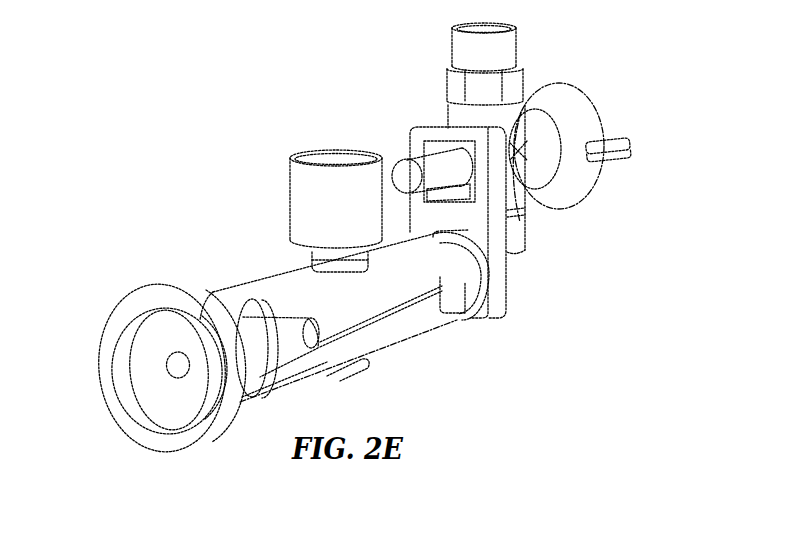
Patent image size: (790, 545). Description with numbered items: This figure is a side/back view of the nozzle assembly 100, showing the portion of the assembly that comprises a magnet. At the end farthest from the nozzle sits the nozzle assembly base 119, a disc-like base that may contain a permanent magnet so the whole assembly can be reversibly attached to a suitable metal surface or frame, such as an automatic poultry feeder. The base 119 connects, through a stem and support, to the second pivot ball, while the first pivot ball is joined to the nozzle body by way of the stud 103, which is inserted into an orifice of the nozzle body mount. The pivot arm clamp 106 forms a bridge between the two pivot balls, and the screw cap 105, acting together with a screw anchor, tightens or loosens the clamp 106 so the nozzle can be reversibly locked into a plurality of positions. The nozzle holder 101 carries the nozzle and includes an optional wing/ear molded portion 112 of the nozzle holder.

The nozzle assembly 100 is at (215, 235).
The nozzle holder 101 is at (579, 177).
The stud 103 is at (407, 175).
The screw cap 105 is at (320, 205).
The pivot arm clamp 106 is at (393, 338).
The wing/ear molded portion of the nozzle holder 112 is at (613, 143).
The nozzle assembly base 119 is at (123, 362).